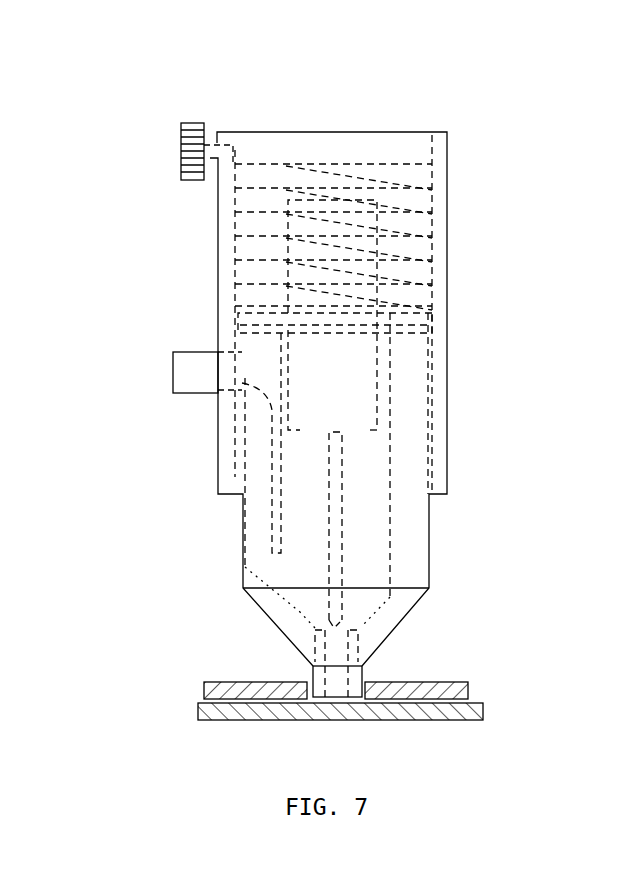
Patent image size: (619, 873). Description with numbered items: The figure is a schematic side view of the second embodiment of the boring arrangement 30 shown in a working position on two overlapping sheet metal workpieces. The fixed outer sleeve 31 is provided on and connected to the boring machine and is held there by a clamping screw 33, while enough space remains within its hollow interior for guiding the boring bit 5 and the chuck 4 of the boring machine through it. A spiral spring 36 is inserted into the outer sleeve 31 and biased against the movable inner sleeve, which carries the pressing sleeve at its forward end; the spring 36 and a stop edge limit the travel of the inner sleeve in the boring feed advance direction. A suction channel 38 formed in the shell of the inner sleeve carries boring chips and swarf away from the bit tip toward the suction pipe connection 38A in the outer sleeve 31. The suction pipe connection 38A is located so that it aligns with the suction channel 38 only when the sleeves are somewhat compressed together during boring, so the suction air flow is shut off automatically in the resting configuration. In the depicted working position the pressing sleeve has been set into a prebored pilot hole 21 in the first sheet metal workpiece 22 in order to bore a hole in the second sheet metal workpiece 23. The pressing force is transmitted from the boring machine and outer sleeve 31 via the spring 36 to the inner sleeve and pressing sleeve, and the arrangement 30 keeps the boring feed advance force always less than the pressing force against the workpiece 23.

The boring arrangement 30 is at (526, 76).
The outer sleeve 31 is at (443, 242).
The clamping screw 33 is at (190, 152).
The spiral spring 36 is at (405, 205).
The suction pipe connection 38A is at (188, 372).
The suction channel 38 is at (243, 465).
The chuck 4 is at (365, 400).
The boring bit 5 is at (333, 608).
The prebored pilot hole 21 is at (307, 682).
The first sheet metal workpiece 22 is at (448, 682).
The second sheet metal workpiece 23 is at (452, 720).